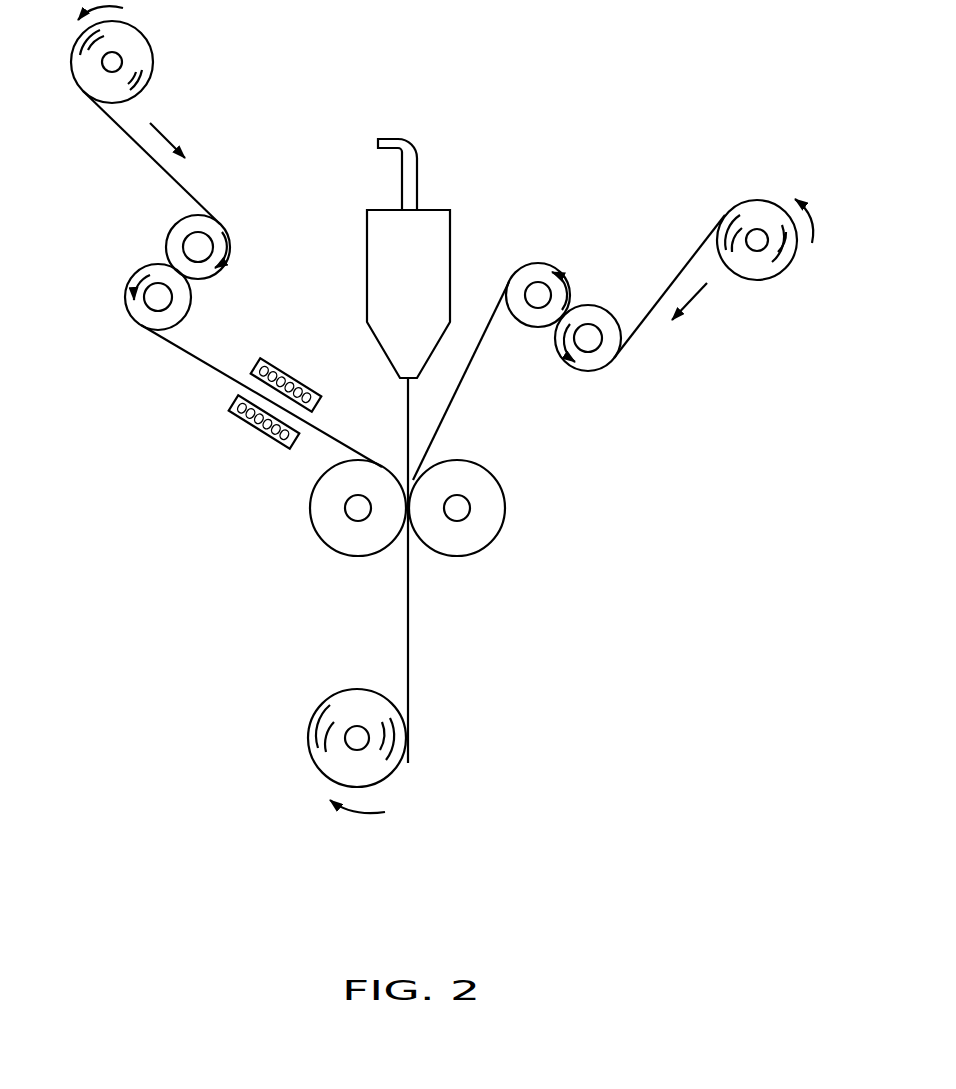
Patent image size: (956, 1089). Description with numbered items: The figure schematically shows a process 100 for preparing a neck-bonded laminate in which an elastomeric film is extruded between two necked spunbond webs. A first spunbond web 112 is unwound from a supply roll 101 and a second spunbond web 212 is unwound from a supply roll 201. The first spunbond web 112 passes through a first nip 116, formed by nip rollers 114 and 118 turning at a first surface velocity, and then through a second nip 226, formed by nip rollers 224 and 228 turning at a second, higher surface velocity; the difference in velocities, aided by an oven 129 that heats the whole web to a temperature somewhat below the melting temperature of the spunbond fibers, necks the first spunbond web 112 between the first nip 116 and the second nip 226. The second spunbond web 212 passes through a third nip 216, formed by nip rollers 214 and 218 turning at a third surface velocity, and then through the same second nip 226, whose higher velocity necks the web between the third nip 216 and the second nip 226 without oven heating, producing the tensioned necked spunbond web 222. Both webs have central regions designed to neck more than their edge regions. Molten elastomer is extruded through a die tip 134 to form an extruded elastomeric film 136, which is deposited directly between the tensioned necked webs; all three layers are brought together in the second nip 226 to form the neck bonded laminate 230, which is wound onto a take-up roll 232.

The process 100 is at (566, 122).
The supply roll 101 is at (155, 48).
The first spunbond web 112 is at (192, 192).
The nip roller 114 is at (183, 232).
The first nip 116 is at (140, 248).
The nip roller 118 is at (175, 315).
The oven 129 is at (248, 425).
The die tip 134 is at (400, 378).
The extruded elastomeric film 136 is at (410, 398).
The supply roll 201 is at (767, 283).
The second spunbond web 212 is at (683, 277).
The nip roller 214 is at (598, 306).
The third nip 216 is at (634, 397).
The nip roller 218 is at (533, 263).
The necked spunbond web 222 is at (445, 422).
The nip roller 224 is at (335, 535).
The second nip 226 is at (420, 550).
The nip roller 228 is at (485, 547).
The neck bonded laminate 230 is at (410, 670).
The take-up roll 232 is at (403, 762).